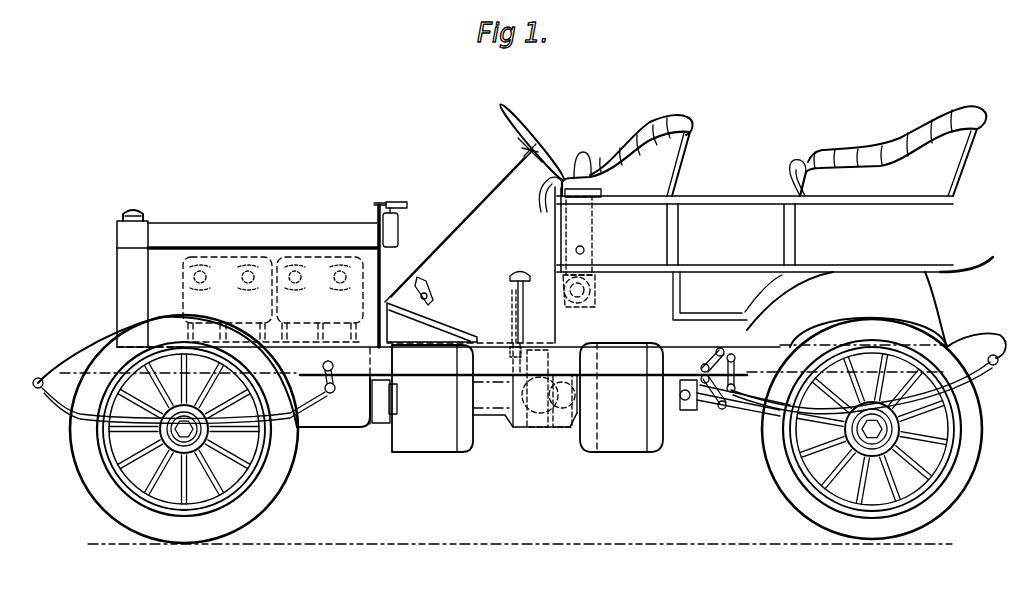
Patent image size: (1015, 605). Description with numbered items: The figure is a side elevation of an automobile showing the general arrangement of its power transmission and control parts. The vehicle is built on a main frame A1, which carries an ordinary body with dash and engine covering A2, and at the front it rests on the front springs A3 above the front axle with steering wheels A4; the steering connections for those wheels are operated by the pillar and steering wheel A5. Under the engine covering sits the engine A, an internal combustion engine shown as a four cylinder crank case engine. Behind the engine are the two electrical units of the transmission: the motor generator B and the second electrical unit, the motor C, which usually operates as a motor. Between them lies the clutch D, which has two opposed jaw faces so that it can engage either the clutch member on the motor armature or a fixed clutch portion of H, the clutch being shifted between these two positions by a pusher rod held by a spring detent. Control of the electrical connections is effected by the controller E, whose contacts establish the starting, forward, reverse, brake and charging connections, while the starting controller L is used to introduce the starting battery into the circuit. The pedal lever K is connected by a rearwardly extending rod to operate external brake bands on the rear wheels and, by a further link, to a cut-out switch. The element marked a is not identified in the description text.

The engine A is at (218, 274).
The main frame A1 is at (362, 366).
The body including dash and engine covering A2 is at (348, 222).
The front springs A3 is at (70, 406).
The front axle with steering wheels A4 is at (103, 506).
The steering wheel and pillar A5 is at (520, 131).
The motor generator B is at (435, 430).
The motor C is at (630, 437).
The clutch D is at (552, 422).
The controller E is at (558, 266).
The fixed clutch member H is at (522, 410).
The pedal lever K is at (518, 300).
The starting controller L is at (405, 205).
The shaft coupling a is at (380, 398).